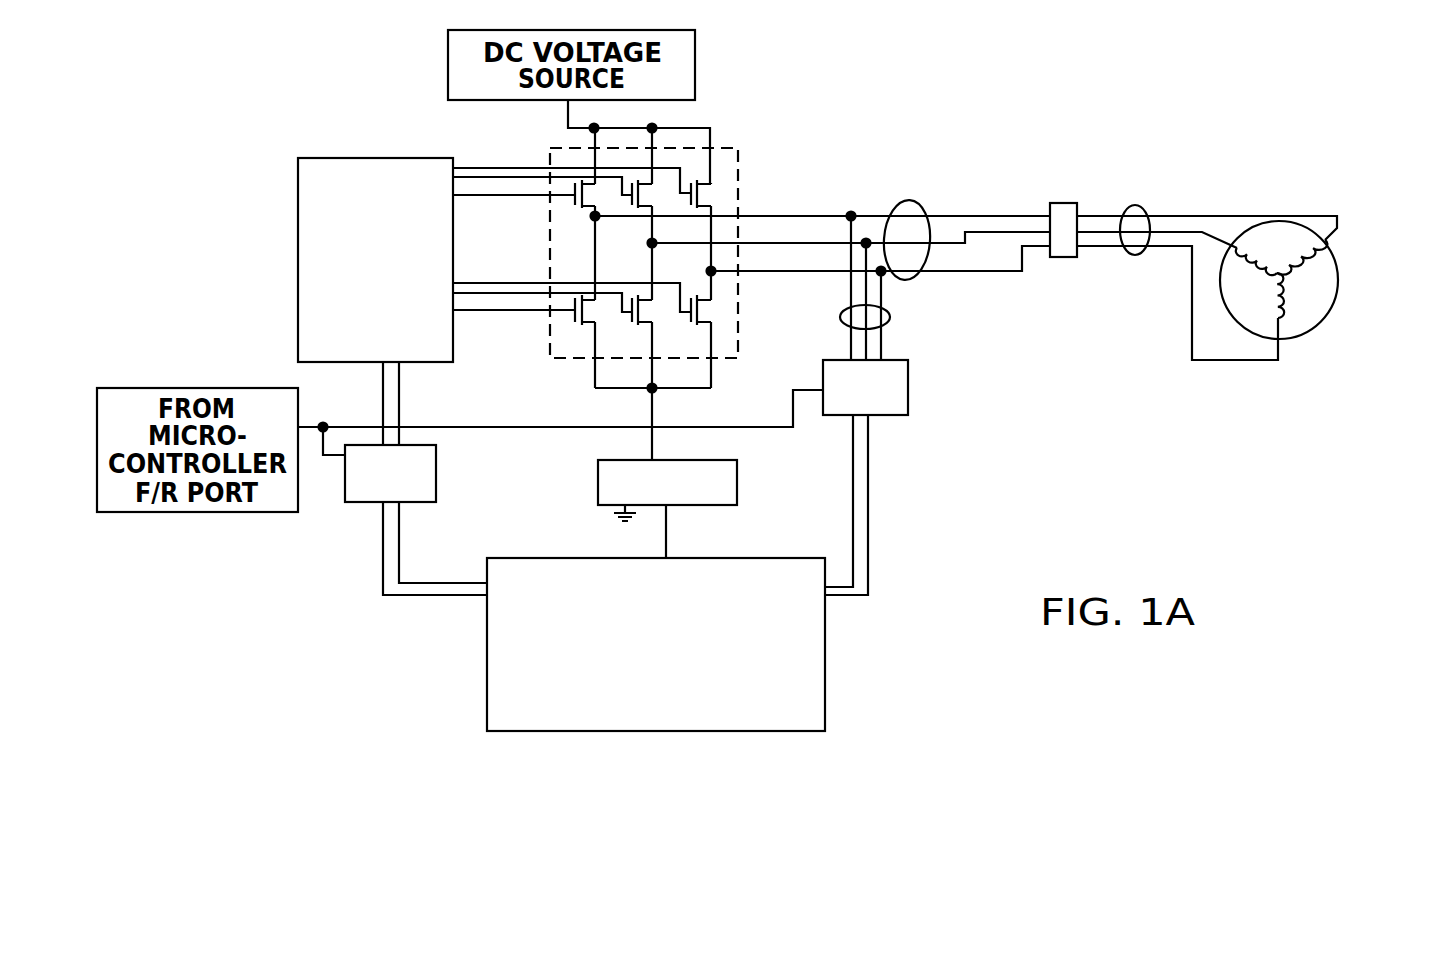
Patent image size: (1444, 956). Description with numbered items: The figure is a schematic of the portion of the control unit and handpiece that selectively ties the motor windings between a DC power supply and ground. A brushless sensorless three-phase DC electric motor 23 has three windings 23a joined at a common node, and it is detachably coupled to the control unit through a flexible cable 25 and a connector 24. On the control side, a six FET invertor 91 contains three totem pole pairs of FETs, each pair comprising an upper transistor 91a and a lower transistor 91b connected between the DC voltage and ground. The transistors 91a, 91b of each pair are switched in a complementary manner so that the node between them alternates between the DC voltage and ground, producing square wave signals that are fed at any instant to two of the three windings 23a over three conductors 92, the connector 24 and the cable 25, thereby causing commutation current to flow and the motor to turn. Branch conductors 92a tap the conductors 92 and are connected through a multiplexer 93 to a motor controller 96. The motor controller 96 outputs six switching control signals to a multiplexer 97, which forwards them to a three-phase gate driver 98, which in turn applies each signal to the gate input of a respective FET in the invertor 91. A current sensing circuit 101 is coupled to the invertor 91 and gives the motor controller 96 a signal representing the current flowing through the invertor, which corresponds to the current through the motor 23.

The brushless sensorless three-phase DC electric motor 23 is at (1342, 207).
The windings 23a is at (1255, 262).
The connector 24 is at (1060, 203).
The flexible cable 25 is at (1136, 205).
The six FET invertor 91 is at (735, 160).
The upper FET transistor 91a is at (565, 208).
The lower FET transistor 91b is at (580, 318).
The conductors 92 is at (918, 202).
The branch conductors 92a is at (890, 312).
The multiplexer 93 is at (908, 402).
The motor controller 96 is at (655, 713).
The multiplexer 97 is at (436, 490).
The three-phase gate driver 98 is at (378, 320).
The current sensing circuit 101 is at (737, 490).